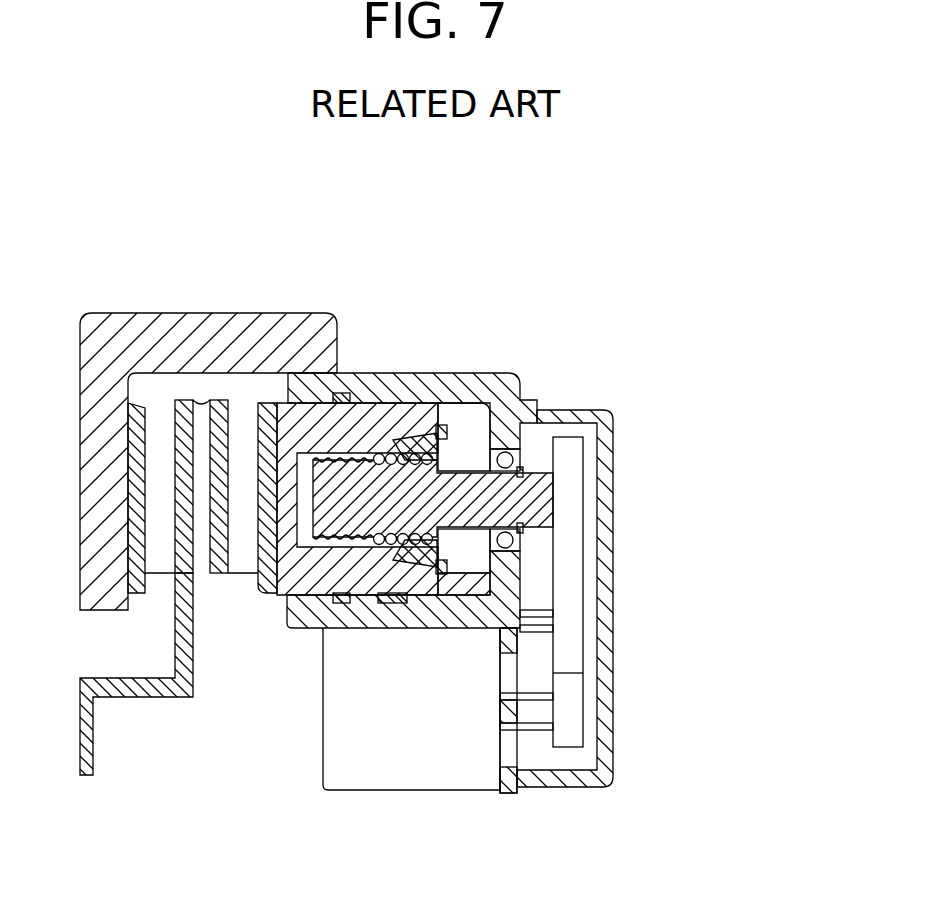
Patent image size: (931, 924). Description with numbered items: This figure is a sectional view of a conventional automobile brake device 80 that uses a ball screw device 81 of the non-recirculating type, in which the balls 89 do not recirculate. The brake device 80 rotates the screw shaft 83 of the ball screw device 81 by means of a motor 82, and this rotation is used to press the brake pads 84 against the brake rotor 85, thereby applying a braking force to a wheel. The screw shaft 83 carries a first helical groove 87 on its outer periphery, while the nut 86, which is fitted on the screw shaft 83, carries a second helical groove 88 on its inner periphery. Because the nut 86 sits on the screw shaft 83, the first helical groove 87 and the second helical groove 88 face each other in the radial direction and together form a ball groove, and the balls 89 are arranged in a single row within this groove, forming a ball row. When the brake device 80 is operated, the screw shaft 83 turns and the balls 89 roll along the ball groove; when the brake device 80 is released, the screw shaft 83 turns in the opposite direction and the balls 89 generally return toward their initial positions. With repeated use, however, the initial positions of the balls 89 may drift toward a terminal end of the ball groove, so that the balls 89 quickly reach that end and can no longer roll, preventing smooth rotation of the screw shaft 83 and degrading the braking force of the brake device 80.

The brake device 80 is at (650, 277).
The ball screw device 81 is at (457, 450).
The motor 82 is at (440, 777).
The screw shaft 83 is at (617, 510).
The brake pads 84 is at (153, 432).
The brake rotor 85 is at (177, 428).
The nut 86 is at (412, 430).
The first helical groove 87 is at (323, 547).
The second helical groove 88 is at (383, 513).
The balls 89 is at (378, 450).